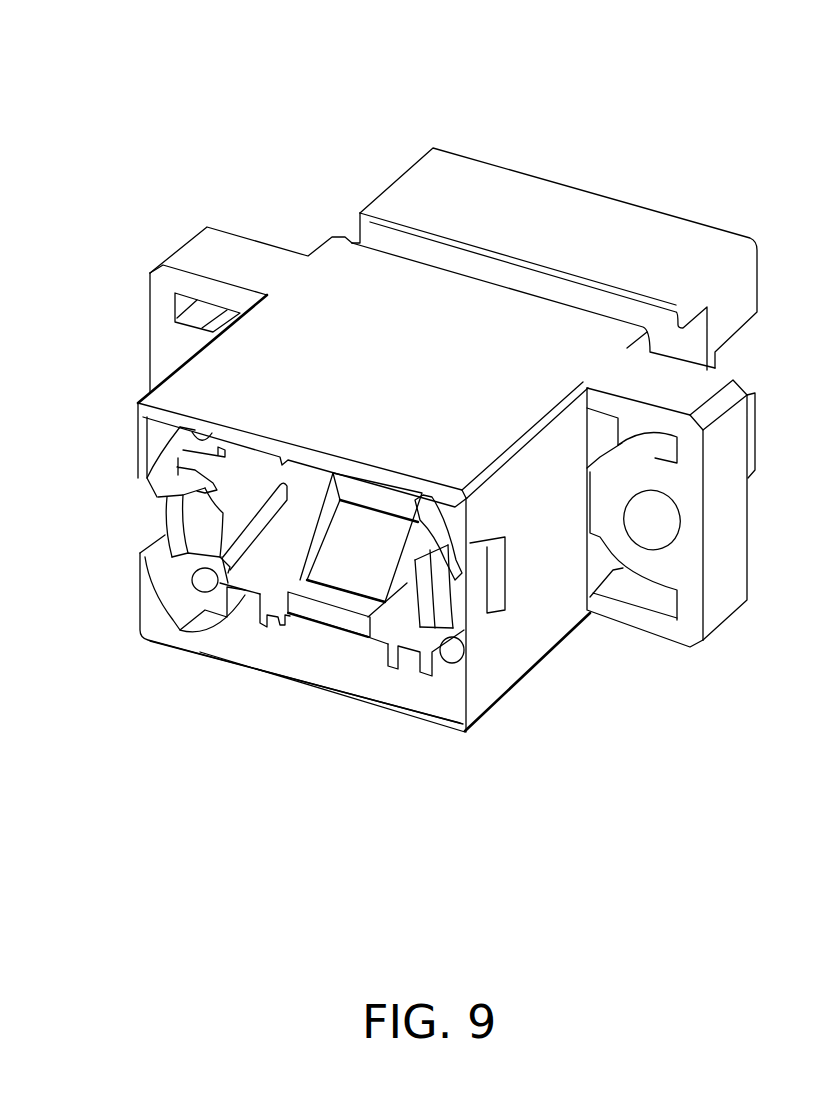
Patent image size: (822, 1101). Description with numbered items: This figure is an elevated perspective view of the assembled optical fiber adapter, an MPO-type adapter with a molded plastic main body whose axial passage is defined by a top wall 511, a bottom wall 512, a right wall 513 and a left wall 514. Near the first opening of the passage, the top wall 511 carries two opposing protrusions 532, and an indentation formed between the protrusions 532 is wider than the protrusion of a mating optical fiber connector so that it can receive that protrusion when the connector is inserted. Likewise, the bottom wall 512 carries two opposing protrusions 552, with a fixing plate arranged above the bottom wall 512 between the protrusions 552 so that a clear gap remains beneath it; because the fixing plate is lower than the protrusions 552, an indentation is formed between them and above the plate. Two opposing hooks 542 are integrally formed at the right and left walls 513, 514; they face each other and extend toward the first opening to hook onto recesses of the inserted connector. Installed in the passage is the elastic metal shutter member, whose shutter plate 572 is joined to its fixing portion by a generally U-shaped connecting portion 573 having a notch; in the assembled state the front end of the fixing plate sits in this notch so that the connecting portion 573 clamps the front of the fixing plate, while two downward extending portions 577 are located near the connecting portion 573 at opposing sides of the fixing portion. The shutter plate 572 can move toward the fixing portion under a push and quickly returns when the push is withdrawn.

The top wall 511 is at (348, 305).
The bottom wall 512 is at (233, 657).
The right wall 513 is at (545, 613).
The left wall 514 is at (148, 613).
The protrusions 532 is at (248, 450).
The hooks 542 is at (433, 593).
The protrusions 552 is at (234, 626).
The shutter plate 572 is at (380, 535).
The connecting portion 573 is at (327, 617).
The extending portions 577 is at (290, 617).